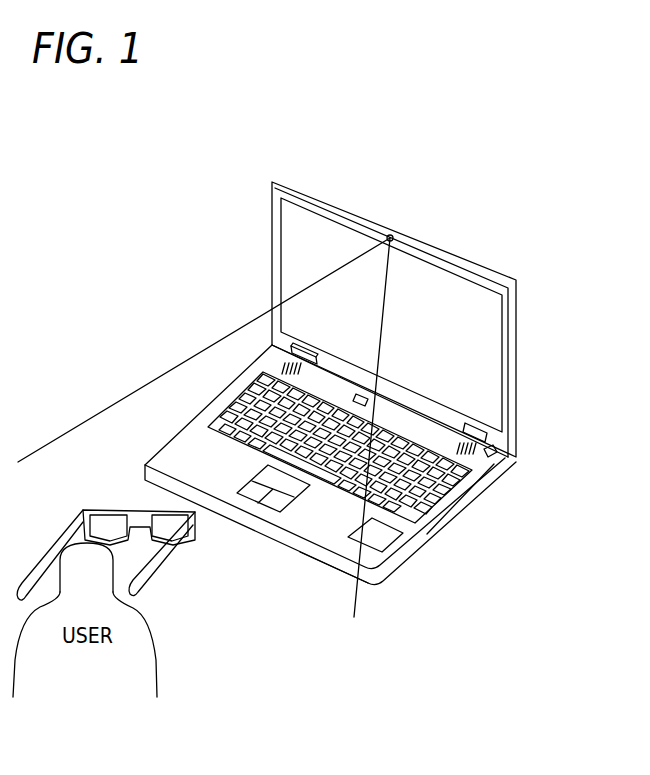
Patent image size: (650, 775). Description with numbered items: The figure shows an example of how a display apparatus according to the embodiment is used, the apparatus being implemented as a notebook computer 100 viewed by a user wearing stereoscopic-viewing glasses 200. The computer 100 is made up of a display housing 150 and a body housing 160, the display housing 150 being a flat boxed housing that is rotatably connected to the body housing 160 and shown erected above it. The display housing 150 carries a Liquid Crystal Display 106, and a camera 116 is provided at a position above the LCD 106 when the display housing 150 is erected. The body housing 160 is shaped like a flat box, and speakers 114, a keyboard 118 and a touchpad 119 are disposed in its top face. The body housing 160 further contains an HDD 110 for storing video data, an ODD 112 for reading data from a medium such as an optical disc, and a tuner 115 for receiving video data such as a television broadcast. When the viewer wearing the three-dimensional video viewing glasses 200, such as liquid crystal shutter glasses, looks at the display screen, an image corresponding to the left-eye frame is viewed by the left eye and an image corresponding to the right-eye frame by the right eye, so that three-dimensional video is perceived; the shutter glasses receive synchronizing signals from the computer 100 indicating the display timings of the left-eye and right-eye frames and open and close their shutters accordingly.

The notebook computer 100 is at (328, 162).
The display housing 150 is at (480, 263).
The Liquid Crystal Display (LCD) 106 is at (493, 317).
The camera 116 is at (392, 236).
The speakers 114 is at (305, 371).
The tuner 115 is at (488, 458).
The keyboard 118 is at (478, 463).
The ODD 112 is at (463, 507).
The HDD 110 is at (383, 536).
The body housing 160 is at (380, 578).
The touchpad 119 is at (284, 488).
The stereoscopic-viewing glasses 200 is at (163, 556).